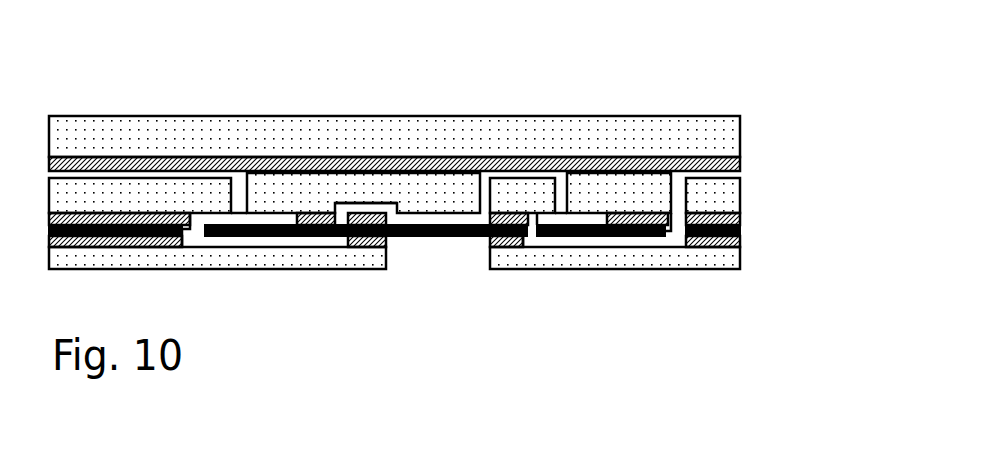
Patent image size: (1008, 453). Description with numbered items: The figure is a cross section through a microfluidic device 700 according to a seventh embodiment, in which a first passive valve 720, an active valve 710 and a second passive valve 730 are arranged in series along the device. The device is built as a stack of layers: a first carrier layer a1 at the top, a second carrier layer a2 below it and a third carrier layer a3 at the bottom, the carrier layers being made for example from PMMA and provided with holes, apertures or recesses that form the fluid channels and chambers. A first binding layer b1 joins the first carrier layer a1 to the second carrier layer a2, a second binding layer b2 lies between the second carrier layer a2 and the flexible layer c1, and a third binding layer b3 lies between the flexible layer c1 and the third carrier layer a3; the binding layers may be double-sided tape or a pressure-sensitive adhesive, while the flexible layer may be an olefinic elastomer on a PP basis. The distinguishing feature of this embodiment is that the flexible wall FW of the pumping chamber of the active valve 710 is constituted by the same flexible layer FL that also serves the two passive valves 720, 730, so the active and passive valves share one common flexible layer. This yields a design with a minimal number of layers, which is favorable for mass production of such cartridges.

The microfluidic device 700 is at (85, 98).
The first passive valve 720 is at (244, 196).
The active valve 710 is at (418, 223).
The second passive valve 730 is at (569, 196).
The first carrier layer a1 is at (727, 140).
The first binding layer b1 is at (727, 165).
The second carrier layer a2 is at (727, 197).
The second binding layer b2 is at (728, 219).
The flexible layer c1 is at (728, 227).
The third binding layer b3 is at (728, 240).
The third carrier layer a3 is at (728, 260).
The flexible layer FL is at (248, 236).
The flexible wall FW is at (426, 237).